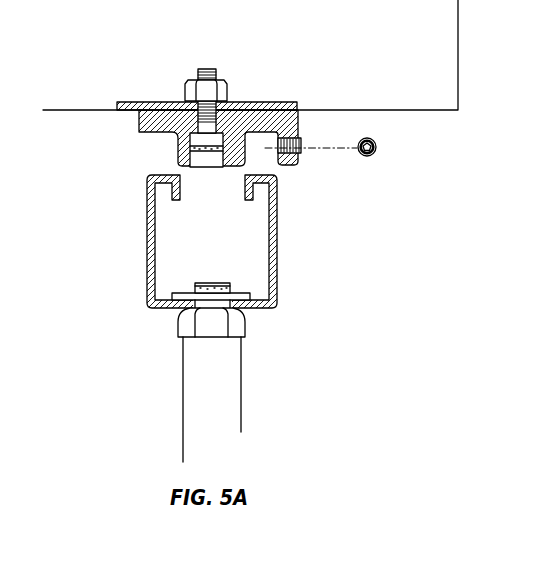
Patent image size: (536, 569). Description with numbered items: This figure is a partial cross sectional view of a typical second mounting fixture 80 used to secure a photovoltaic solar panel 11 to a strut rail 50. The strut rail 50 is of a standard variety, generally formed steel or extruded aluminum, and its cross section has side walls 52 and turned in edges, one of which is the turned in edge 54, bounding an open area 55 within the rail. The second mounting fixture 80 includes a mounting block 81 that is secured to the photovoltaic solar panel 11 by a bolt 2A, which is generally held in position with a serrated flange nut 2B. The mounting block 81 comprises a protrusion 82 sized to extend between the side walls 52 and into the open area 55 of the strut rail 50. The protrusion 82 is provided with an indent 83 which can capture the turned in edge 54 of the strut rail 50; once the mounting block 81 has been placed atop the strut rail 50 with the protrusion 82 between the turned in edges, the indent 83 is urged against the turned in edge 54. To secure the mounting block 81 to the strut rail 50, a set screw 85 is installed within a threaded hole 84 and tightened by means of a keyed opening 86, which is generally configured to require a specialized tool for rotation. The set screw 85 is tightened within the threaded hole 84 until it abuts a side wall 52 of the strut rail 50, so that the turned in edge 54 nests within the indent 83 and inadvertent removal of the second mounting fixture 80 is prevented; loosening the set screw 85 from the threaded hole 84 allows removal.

The bolt 2A is at (192, 80).
The serrated flange nut 2B is at (225, 101).
The photovoltaic solar panel 11 is at (398, 42).
The strut rail 50 is at (199, 318).
The side wall 52 is at (277, 228).
The turned in edge 54 is at (247, 188).
The open area 55 is at (224, 263).
The second mounting fixture 80 is at (201, 135).
The mounting block 81 is at (297, 119).
The protrusion 82 is at (240, 168).
The indent 83 is at (246, 153).
The threaded hole 84 is at (277, 145).
The set screw 85 is at (393, 148).
The keyed opening 86 is at (376, 141).